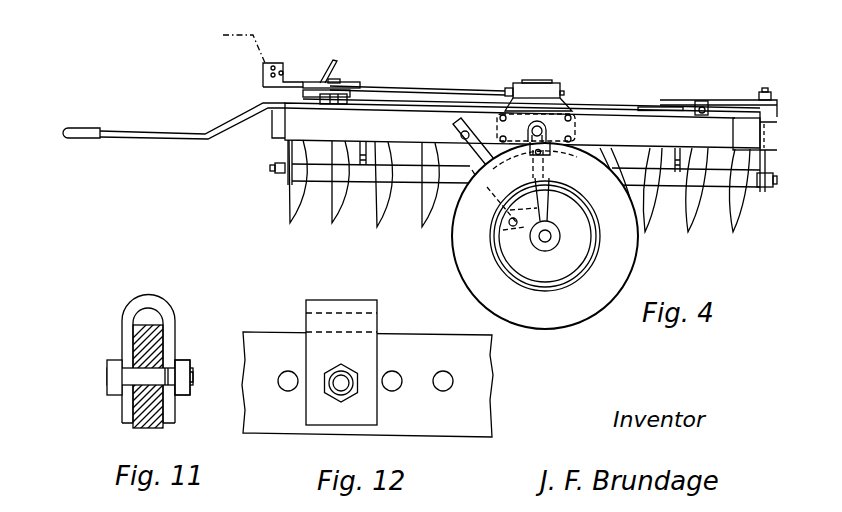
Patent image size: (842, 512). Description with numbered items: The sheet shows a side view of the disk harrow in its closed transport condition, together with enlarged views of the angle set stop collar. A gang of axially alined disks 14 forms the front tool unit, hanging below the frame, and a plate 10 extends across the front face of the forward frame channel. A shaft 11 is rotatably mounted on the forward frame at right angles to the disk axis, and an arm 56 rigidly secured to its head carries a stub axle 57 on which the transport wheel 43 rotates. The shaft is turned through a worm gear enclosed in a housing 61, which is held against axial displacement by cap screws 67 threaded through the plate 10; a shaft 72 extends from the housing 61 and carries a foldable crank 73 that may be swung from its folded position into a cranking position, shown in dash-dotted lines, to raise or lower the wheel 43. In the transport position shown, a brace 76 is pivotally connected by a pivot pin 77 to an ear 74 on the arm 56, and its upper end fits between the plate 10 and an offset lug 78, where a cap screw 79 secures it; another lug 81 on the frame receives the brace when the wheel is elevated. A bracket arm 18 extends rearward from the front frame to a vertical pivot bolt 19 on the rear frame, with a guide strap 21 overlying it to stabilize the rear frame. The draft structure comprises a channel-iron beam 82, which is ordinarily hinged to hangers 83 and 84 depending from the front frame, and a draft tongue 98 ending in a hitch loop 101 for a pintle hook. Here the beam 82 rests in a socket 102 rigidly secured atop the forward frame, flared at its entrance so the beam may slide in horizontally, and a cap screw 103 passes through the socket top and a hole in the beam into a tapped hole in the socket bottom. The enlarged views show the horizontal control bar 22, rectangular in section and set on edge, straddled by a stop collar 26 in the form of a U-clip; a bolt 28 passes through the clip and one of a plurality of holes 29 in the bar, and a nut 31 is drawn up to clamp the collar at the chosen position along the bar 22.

In FIG. 4, the plate 10 is at (417, 113).
In FIG. 4, the shaft 11 is at (547, 131).
In FIG. 4, the disks 14 is at (331, 195).
In FIG. 4, the bracket arm 18 is at (656, 107).
In FIG. 4, the pivot bolt 19 is at (765, 92).
In FIG. 4, the guide strap 21 is at (683, 101).
In FIG. 11, the control bar 22 is at (148, 425).
In FIG. 12, the control bar 22 is at (427, 335).
In FIG. 11, the stop collar 26 is at (169, 312).
In FIG. 12, the stop collar 26 is at (306, 318).
In FIG. 11, the bolt 28 is at (108, 376).
In FIG. 12, the holes 29 is at (439, 375).
In FIG. 11, the nut 31 is at (182, 364).
In FIG. 12, the nut 31 is at (344, 369).
In FIG. 4, the transport wheel 43 is at (574, 326).
In FIG. 4, the arm 56 is at (548, 180).
In FIG. 4, the stub axle 57 is at (550, 243).
In FIG. 4, the housing 61 is at (545, 85).
In FIG. 4, the cap screws 67 is at (570, 139).
In FIG. 4, the shaft 72 is at (468, 89).
In FIG. 4, the crank 73 is at (328, 68).
In FIG. 4, the ear 74 is at (514, 228).
In FIG. 4, the brace 76 is at (492, 196).
In FIG. 4, the pivot pin 77 is at (497, 233).
In FIG. 4, the lug 78 is at (453, 124).
In FIG. 4, the cap screw 79 is at (469, 136).
In FIG. 4, the lug 81 is at (703, 104).
In FIG. 4, the beam 82 is at (330, 105).
In FIG. 4, the hanger 83 is at (677, 174).
In FIG. 4, the hanger 84 is at (364, 168).
In FIG. 4, the draft tongue 98 is at (153, 132).
In FIG. 4, the hitch element 101 is at (81, 130).
In FIG. 4, the socket 102 is at (352, 97).
In FIG. 4, the cap screw 103 is at (340, 84).